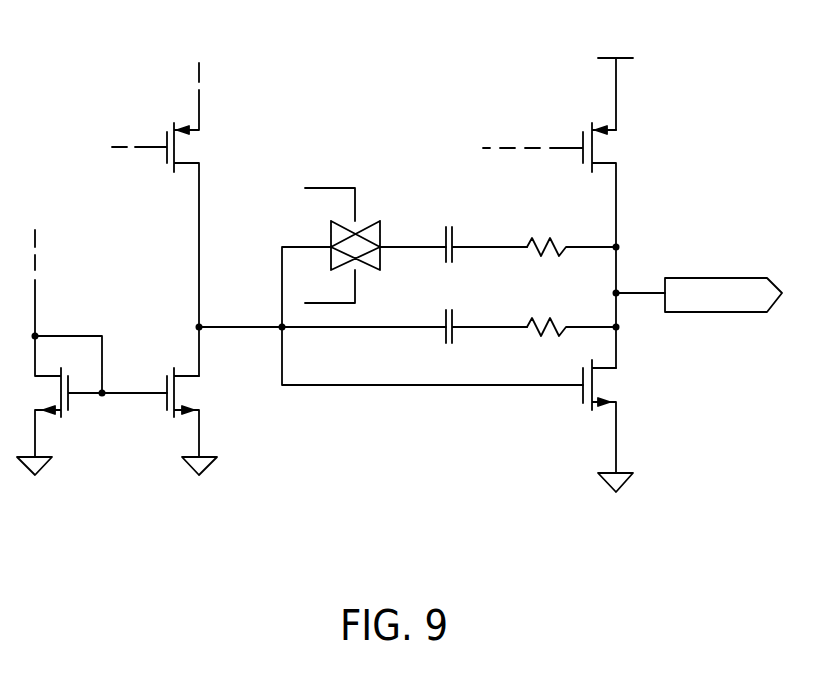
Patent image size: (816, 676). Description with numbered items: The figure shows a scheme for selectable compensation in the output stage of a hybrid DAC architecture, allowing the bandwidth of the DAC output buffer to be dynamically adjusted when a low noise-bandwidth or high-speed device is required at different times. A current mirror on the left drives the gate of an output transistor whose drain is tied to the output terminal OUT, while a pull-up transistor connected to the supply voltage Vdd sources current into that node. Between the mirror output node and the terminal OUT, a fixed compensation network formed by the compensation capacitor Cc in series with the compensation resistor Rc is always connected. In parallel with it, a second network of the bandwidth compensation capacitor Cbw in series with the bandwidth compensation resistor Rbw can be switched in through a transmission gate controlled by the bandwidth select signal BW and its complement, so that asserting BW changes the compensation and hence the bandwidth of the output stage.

The bandwidth select signal BW is at (375, 237).
The bandwidth compensation capacitor Cbw is at (477, 234).
The bandwidth compensation resistor Rbw is at (571, 235).
The compensation capacitor Cc is at (482, 316).
The compensation resistor Rc is at (571, 317).
The supply voltage Vdd is at (615, 86).
The output terminal OUT is at (699, 295).